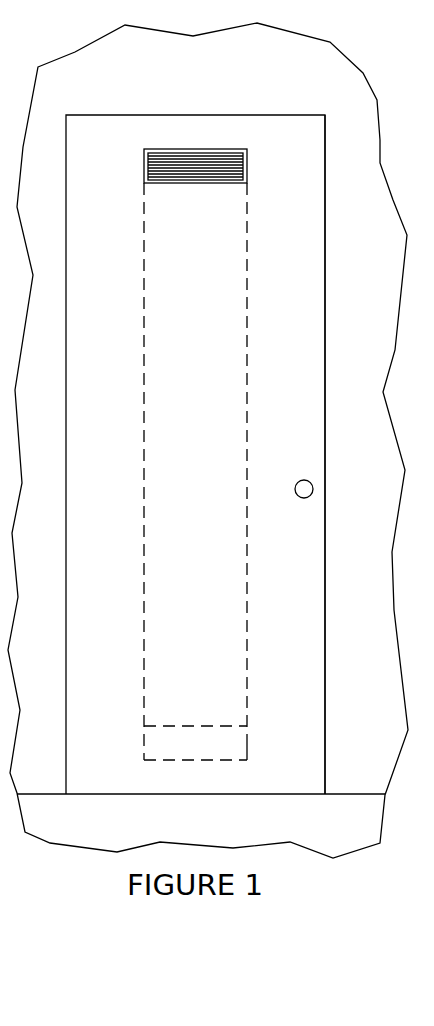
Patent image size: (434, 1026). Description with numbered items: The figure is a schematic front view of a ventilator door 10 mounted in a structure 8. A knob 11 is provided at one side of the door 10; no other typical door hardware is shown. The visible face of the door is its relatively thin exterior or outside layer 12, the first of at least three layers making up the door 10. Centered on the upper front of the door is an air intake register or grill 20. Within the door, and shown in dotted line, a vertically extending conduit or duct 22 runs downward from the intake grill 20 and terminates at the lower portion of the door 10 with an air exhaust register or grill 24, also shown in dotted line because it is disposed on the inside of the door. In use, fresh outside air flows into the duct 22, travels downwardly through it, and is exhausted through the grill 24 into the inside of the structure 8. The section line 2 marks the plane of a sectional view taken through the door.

The structure 8 is at (330, 35).
The ventilator door 10 is at (274, 98).
The knob 11 is at (311, 483).
The exterior layer 12 is at (313, 260).
The air intake register 20 is at (245, 183).
The duct 22 is at (247, 344).
The air exhaust register 24 is at (247, 745).
The section line 2- 2 is at (233, 88).